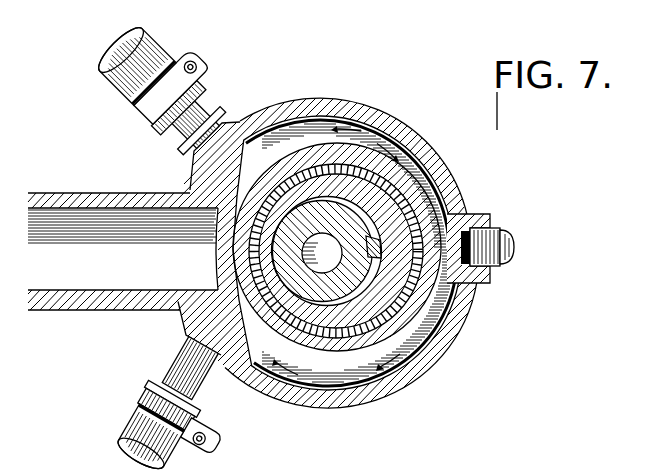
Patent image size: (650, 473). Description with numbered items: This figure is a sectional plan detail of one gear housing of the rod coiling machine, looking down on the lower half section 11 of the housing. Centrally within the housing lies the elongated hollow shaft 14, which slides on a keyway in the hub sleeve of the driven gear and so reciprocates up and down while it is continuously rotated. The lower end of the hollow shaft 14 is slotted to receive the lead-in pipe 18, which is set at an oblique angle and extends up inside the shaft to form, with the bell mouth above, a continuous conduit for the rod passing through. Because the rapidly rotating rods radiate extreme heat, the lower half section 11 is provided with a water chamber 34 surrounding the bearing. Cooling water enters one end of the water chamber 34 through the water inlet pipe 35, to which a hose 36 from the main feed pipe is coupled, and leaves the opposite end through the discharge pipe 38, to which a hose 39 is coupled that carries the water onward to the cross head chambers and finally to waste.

The lower half section 11 is at (123, 251).
The hollow shaft 14 is at (352, 222).
The lead-in pipe 18 is at (368, 236).
The water chamber 34 is at (436, 318).
The water inlet pipe 35 is at (208, 108).
The hose 36 is at (112, 62).
The discharge pipe 38 is at (212, 404).
The hose 39 is at (132, 433).